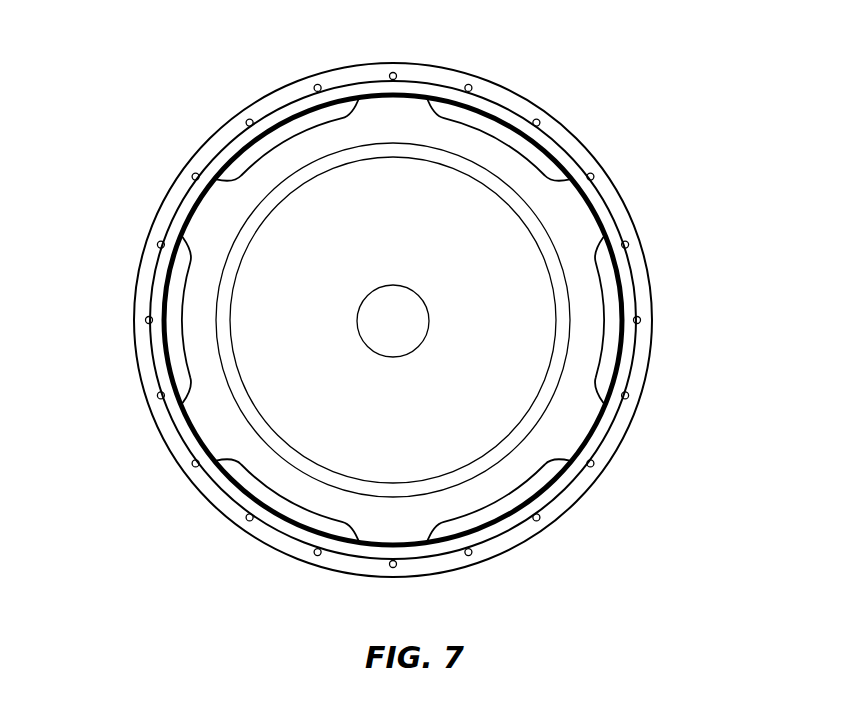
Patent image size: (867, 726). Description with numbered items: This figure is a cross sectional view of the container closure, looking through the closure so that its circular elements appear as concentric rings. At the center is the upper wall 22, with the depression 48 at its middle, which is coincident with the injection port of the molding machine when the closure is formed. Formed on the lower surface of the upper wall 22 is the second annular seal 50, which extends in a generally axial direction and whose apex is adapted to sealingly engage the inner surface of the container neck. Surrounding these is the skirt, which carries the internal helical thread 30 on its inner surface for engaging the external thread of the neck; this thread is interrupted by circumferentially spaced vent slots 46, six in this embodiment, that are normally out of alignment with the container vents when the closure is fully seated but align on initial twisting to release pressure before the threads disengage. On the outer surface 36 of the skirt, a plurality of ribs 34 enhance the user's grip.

The upper wall 22 is at (478, 231).
The internal helical thread 30 is at (306, 122).
The ribs 34 is at (246, 121).
The outer surface 36 is at (552, 118).
The vent slots 46 is at (403, 105).
The depression 48 is at (408, 307).
The second annular seal 50 is at (478, 466).